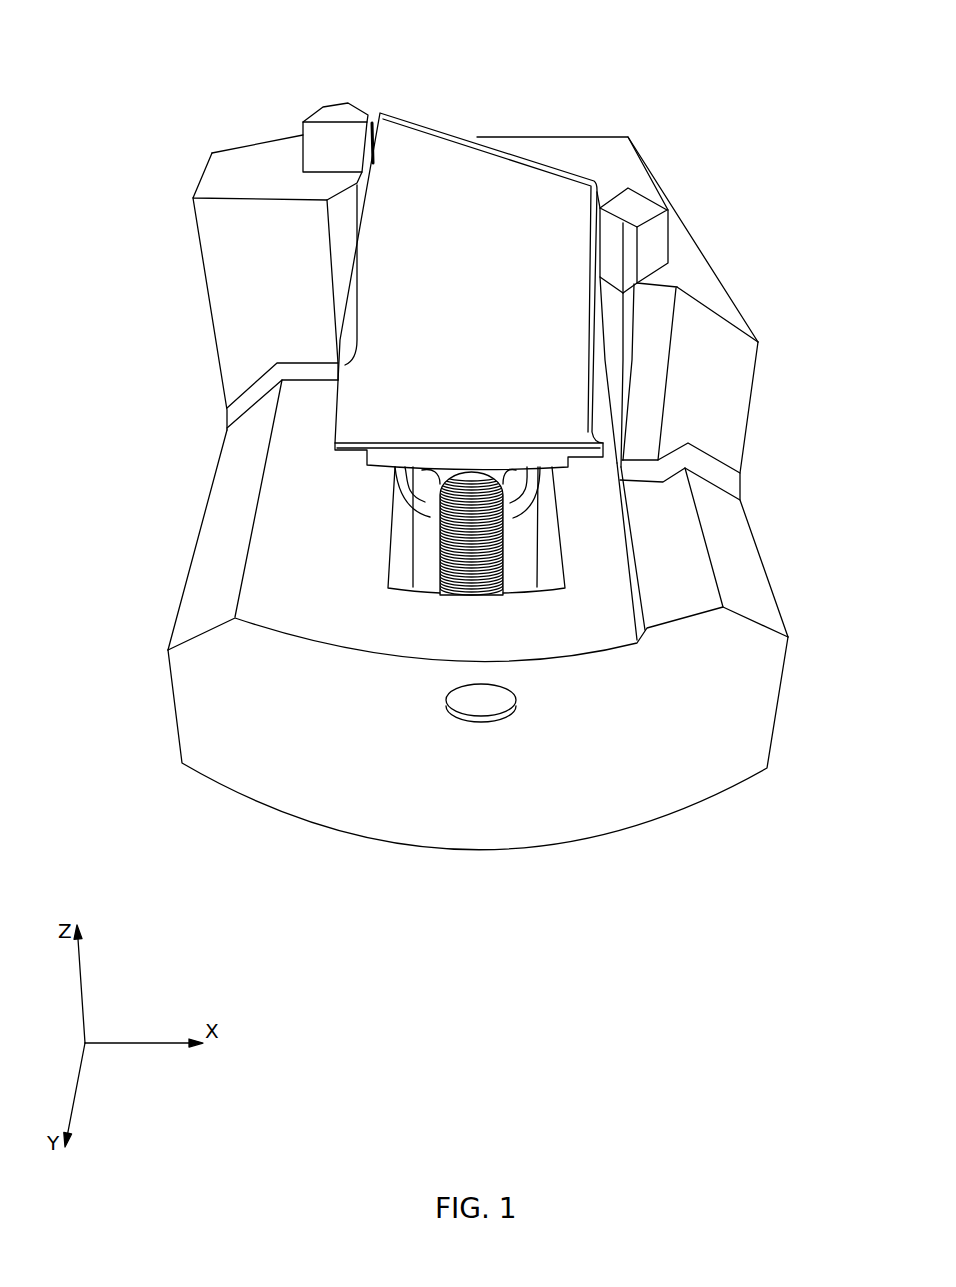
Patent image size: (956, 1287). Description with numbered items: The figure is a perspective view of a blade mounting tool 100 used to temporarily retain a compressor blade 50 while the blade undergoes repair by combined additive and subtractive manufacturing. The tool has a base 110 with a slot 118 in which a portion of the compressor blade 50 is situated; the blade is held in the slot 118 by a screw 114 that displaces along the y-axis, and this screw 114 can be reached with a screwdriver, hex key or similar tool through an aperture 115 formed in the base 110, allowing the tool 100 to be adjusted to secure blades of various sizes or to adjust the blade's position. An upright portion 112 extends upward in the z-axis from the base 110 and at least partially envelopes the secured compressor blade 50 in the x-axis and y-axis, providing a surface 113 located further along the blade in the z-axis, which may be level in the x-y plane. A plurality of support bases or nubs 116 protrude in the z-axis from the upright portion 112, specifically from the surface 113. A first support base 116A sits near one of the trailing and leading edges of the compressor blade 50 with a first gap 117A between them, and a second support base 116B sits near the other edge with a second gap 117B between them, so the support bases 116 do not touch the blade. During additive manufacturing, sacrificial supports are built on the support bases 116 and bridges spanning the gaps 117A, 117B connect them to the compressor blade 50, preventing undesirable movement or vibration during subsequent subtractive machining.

The blade mounting tool 100 is at (133, 159).
The compressor blade 50 is at (440, 125).
The base 110 is at (285, 550).
The upright portion 112 is at (750, 402).
The surface 113 is at (578, 147).
The screw 114 is at (510, 568).
The aperture 115 is at (475, 733).
The support bases 116 is at (301, 66).
The first support base 116A is at (655, 247).
The second support base 116B is at (322, 143).
The first gap 117A is at (611, 187).
The second gap 117B is at (375, 98).
The slot 118 is at (366, 519).